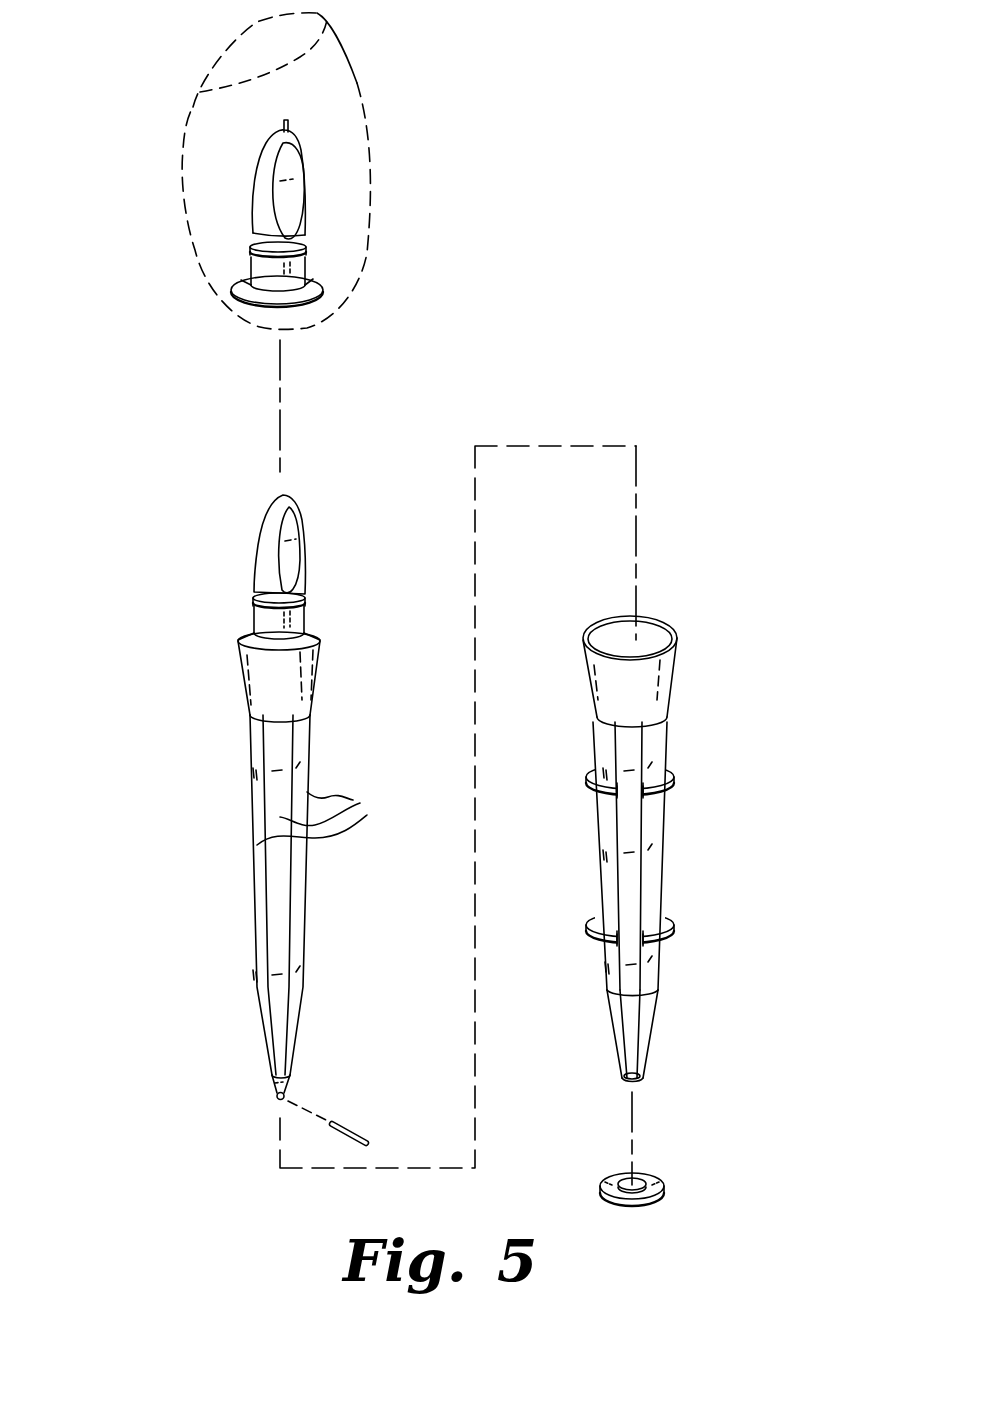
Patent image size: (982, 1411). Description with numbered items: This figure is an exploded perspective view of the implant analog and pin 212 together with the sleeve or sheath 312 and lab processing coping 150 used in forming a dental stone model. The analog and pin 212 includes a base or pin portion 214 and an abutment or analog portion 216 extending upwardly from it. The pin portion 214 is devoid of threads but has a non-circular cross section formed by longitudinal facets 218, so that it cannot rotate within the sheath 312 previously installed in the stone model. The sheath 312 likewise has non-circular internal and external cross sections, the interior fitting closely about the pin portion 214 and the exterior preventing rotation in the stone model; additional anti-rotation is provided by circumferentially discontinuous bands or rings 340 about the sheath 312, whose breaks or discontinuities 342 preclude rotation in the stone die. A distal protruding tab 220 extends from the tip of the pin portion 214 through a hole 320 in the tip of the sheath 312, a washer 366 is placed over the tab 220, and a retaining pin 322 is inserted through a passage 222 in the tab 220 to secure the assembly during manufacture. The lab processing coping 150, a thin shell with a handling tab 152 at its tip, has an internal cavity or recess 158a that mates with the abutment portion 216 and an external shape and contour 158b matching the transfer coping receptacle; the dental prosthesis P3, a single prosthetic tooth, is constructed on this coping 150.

The dental prosthesis P3 is at (184, 192).
The lab processing coping 150 is at (253, 206).
The handling tab 152 is at (288, 120).
The internal cavity or recess 158a is at (303, 212).
The external shape and contour 158b is at (250, 236).
The analog and pin 212 is at (241, 824).
The base or pin portion 214 is at (286, 895).
The abutment or analog portion 216 is at (258, 535).
The longitudinal facets 218 is at (338, 811).
The distal protruding tab 220 is at (272, 1083).
The passage 222 is at (273, 1099).
The retaining pin 322 is at (353, 1130).
The sheath 312 is at (660, 849).
The circumferentially discontinuous bands or rings 340 is at (674, 780).
The breaks or discontinuities 342 is at (634, 812).
The hole 320 is at (637, 1057).
The washer 366 is at (655, 1172).